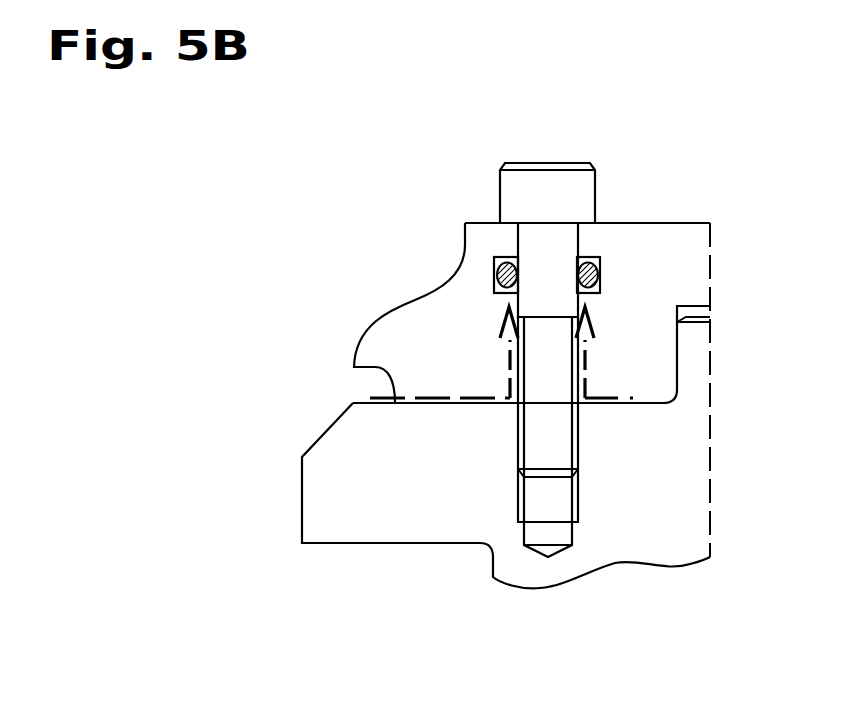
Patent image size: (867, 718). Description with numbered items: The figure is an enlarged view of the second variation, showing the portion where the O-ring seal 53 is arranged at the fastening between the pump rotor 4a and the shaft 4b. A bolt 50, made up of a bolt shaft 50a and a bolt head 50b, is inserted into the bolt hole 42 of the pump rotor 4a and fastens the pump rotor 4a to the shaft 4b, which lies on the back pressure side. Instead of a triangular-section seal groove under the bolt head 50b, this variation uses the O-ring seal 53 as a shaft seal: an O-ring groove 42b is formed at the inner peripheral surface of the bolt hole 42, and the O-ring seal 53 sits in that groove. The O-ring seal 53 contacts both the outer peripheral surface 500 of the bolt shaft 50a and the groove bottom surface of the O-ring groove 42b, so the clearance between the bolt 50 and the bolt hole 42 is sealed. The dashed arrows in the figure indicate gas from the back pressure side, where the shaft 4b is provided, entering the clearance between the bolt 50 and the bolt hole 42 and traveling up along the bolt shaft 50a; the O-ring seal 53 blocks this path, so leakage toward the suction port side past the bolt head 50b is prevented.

The bolt 50 is at (524, 296).
The bolt shaft 50a is at (528, 328).
The bolt head 50b is at (572, 193).
The outer peripheral surface 500 is at (503, 228).
The bolt hole 42 is at (577, 371).
The O-ring groove 42b is at (590, 255).
The O-ring seal 53 is at (495, 258).
The pump rotor 4a is at (413, 343).
The shaft 4b is at (467, 490).